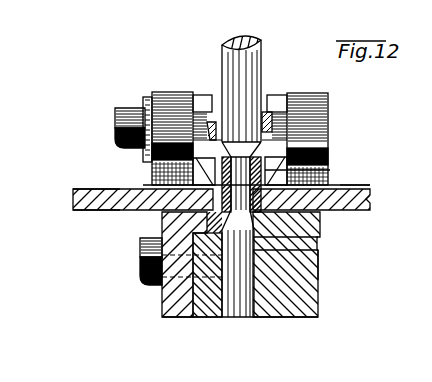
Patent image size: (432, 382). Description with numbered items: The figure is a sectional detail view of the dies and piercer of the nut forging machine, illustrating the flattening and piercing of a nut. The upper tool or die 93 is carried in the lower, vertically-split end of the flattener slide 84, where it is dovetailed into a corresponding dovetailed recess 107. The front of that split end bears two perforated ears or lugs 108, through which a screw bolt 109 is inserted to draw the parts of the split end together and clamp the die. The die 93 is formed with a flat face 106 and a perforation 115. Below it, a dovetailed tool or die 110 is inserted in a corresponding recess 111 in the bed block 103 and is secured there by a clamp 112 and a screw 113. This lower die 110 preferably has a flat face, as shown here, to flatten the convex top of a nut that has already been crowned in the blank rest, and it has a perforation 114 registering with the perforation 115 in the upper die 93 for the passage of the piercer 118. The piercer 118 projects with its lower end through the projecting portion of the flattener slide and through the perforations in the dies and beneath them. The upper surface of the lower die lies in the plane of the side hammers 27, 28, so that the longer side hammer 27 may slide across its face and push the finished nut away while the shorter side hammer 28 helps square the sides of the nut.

The piercer 118 is at (252, 83).
The perforated ears or lugs 108 is at (172, 100).
The screw bolt 109 is at (119, 120).
The perforation 115 is at (330, 138).
The dovetailed recess 107 is at (323, 162).
The flat face 106 is at (196, 177).
The flattener slide 84 is at (330, 173).
The die 93 is at (371, 186).
The side hammer 27 is at (347, 202).
The side hammer 28 is at (111, 192).
The clamp 112 is at (163, 215).
The screw 113 is at (141, 265).
The bed block 103 is at (283, 298).
The dovetailed tool or die 110 is at (322, 224).
The recess 111 is at (317, 239).
The perforation 114 is at (317, 253).